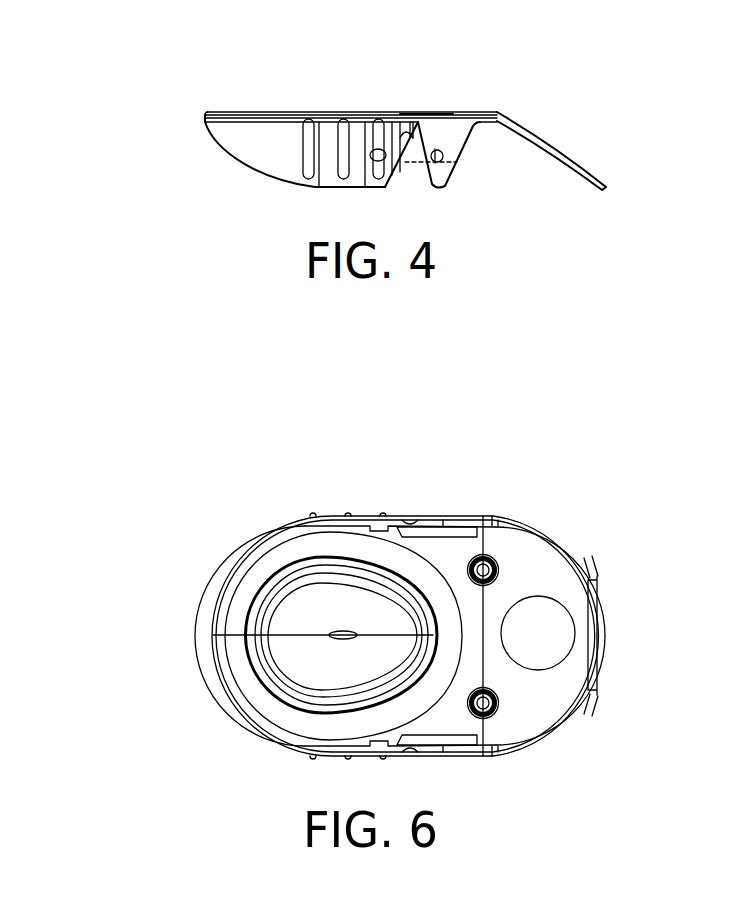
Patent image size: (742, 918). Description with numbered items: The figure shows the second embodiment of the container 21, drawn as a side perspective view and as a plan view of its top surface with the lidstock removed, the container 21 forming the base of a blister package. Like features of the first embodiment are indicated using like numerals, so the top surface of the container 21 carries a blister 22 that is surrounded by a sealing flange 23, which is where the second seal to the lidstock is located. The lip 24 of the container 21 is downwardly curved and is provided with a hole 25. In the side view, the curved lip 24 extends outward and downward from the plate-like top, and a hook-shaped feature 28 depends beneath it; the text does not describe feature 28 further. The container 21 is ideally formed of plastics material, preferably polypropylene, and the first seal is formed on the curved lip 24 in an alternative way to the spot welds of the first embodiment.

In FIG. 4, the container 21 is at (430, 112).
In FIG. 6, the container 21 is at (237, 727).
In FIG. 6, the blister 22 is at (328, 603).
In FIG. 6, the sealing flange 23 is at (270, 556).
In FIG. 4, the curved lip 24 is at (553, 132).
In FIG. 6, the curved lip 24 is at (555, 571).
In FIG. 6, the hole 25 is at (550, 637).
In FIG. 4, the hook 28 is at (449, 140).